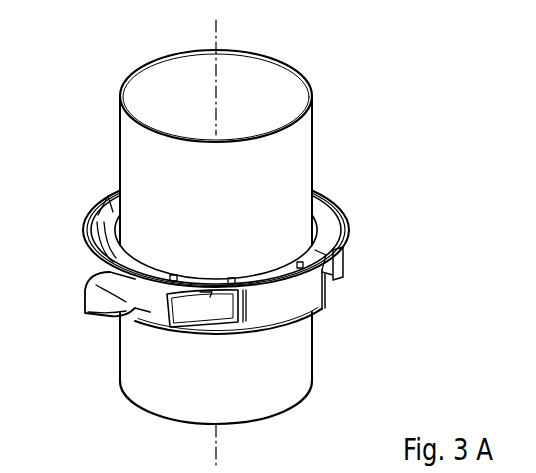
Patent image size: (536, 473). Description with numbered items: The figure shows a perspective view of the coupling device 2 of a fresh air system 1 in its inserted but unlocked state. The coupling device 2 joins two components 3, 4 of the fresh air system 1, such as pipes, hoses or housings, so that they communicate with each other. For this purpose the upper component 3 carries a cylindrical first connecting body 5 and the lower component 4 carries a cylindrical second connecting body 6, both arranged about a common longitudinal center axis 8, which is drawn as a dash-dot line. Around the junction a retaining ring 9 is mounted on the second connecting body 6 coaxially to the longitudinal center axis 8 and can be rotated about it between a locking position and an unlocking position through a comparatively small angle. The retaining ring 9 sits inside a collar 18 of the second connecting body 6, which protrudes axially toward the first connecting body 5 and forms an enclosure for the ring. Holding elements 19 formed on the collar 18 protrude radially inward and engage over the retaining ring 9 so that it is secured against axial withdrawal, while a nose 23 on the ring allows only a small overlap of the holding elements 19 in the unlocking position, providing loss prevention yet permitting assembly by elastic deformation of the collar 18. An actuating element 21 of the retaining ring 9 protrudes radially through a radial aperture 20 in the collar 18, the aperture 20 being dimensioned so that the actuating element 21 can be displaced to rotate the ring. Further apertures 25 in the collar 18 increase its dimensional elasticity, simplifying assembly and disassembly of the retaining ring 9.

The fresh air system 1 is at (246, 236).
The coupling device 2 is at (246, 288).
The component 3 is at (222, 147).
The component 4 is at (231, 368).
The first connecting body 5 is at (121, 127).
The second connecting body 6 is at (119, 367).
The longitudinal center axis 8 is at (199, 48).
The retaining ring 9 is at (90, 212).
The collar 18 is at (278, 313).
The holding elements 19 is at (118, 187).
The radial aperture 20 is at (122, 315).
The actuating element 21 is at (93, 290).
The nose 23 is at (205, 300).
The apertures 25 is at (333, 282).